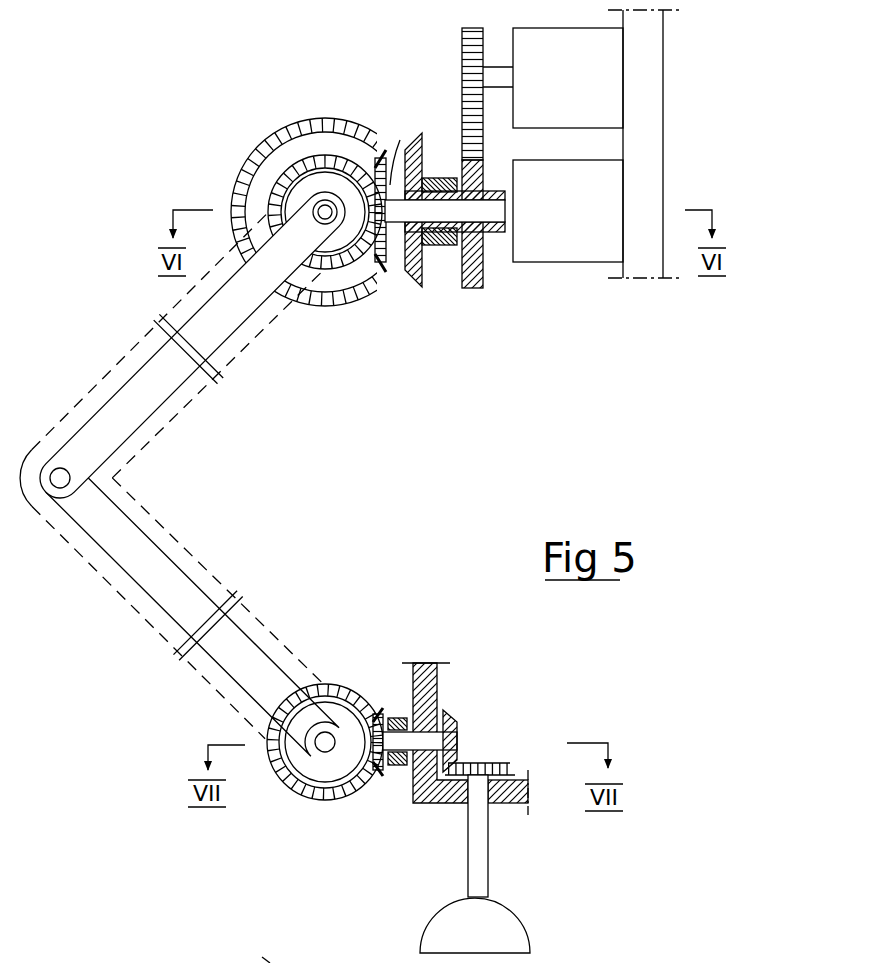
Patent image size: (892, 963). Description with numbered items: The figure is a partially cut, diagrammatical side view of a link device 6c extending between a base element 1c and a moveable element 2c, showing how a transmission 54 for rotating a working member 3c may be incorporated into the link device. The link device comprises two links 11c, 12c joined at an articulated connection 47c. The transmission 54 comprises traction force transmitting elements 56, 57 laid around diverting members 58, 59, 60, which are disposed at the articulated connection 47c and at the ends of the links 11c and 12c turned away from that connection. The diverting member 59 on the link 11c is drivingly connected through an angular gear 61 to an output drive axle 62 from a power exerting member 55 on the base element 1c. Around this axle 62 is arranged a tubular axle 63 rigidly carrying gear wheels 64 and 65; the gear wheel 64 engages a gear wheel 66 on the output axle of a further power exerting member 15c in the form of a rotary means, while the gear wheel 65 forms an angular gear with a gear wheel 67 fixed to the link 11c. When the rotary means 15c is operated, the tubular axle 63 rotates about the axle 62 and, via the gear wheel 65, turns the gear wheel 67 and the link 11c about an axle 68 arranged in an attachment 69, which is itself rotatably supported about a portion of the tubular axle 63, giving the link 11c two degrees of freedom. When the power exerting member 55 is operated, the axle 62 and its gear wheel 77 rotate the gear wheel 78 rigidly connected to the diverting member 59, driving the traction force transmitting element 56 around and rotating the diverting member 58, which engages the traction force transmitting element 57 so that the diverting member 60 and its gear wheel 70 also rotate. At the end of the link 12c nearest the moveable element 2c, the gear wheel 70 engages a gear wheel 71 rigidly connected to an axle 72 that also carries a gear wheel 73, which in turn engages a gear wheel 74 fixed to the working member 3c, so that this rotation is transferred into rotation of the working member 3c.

The base element 1c is at (648, 165).
The power exerting member 15c is at (595, 72).
The power exerting member 55 is at (585, 238).
The gear wheel 66 is at (475, 95).
The gear wheel 64 is at (478, 155).
The transmission 54 is at (278, 187).
The gear wheel 67 is at (262, 152).
The gear wheel 78 is at (307, 168).
The diverting member 59 is at (330, 182).
The traction force transmitting element 56 is at (280, 312).
The traction force transmitting element 57 is at (178, 547).
The link device 6c is at (192, 474).
The link 11c is at (150, 398).
The link 12c is at (165, 598).
The diverting member 58 is at (40, 445).
The articulated connection 47c is at (72, 480).
The axle 68 is at (322, 212).
The gear wheel 77 is at (383, 268).
The gear wheel 65 is at (416, 282).
The output drive axle 62 is at (495, 232).
The tubular axle 63 is at (505, 195).
The angular gear 61 is at (382, 128).
The gear wheel 70 is at (352, 688).
The diverting member 60 is at (305, 765).
The gear wheel 71 is at (385, 768).
The moveable element 2c is at (430, 685).
The axle 72 is at (402, 738).
The gear wheel 73 is at (458, 727).
The gear wheel 74 is at (508, 766).
The working member 3c is at (508, 935).
The attachment 69 is at (255, 947).